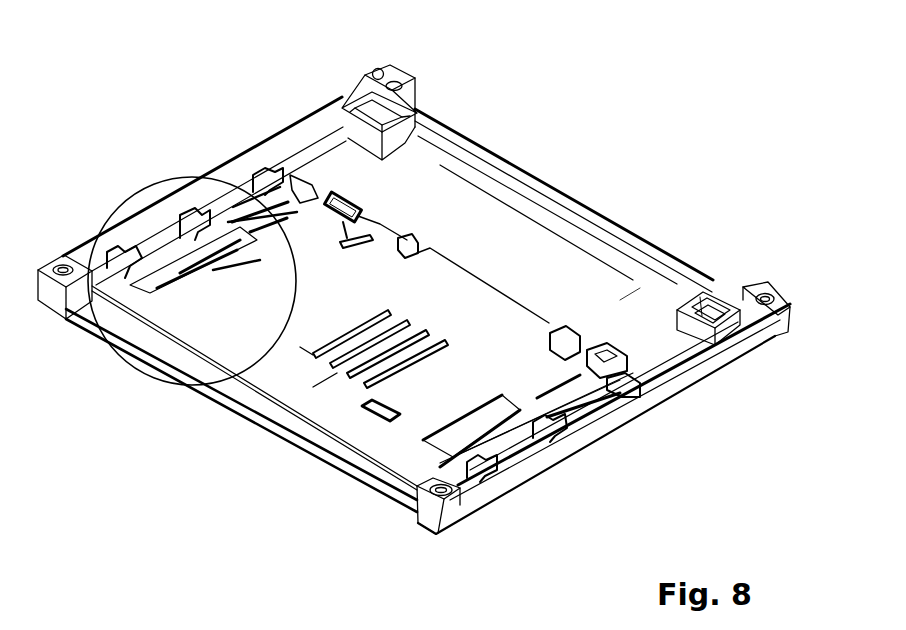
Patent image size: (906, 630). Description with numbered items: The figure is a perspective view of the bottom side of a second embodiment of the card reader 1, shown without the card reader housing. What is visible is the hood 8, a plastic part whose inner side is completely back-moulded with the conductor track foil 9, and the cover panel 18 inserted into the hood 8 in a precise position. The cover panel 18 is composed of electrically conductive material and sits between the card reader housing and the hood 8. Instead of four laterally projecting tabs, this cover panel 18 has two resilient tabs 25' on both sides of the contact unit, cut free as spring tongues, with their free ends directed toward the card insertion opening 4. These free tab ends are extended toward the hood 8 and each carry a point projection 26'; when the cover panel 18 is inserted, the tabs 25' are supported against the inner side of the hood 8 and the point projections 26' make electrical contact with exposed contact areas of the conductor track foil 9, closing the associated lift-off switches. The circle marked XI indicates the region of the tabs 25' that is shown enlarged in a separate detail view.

The card reader 1 is at (147, 112).
The card insertion opening 4 is at (263, 408).
The hood 8 is at (494, 153).
The conductor track foil 9 is at (626, 298).
The cover panel 18 is at (466, 273).
The resilient tabs 25' is at (343, 343).
The point projection 26' is at (311, 364).
The detail view marker XI is at (115, 354).